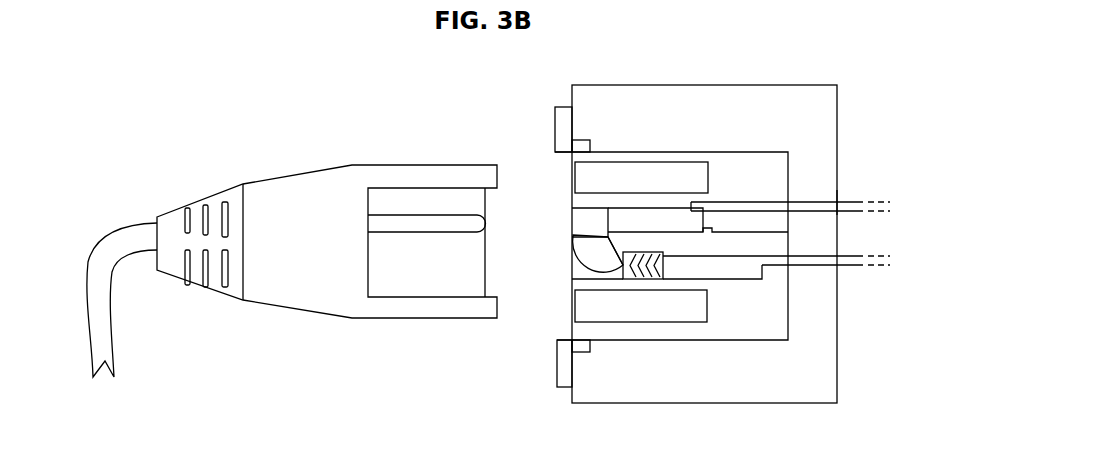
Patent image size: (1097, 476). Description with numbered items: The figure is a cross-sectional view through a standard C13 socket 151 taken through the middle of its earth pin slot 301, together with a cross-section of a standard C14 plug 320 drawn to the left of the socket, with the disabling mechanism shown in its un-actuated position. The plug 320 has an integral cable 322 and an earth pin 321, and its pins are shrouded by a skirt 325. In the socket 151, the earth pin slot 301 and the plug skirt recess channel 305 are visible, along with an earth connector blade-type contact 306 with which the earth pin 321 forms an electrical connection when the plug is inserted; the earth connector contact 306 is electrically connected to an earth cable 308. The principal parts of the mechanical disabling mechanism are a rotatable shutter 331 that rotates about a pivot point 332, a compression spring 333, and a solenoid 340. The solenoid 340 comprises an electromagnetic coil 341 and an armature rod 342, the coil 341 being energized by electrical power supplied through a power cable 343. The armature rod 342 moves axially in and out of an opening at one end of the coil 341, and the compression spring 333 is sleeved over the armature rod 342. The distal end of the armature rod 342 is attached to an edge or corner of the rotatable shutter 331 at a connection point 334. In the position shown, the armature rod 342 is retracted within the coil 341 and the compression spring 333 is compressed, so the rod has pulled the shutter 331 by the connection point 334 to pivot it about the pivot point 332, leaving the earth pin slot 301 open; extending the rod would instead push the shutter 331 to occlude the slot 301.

The socket 151 is at (628, 85).
The earth pin slot 301 is at (577, 220).
The plug skirt recess channel 305 is at (682, 173).
The earth connector blade-type contact 306 is at (675, 223).
The earth cable 308 is at (845, 203).
The plug 320 is at (292, 173).
The earth pin 321 is at (407, 213).
The cable 322 is at (123, 337).
The skirt 325 is at (492, 178).
The rotatable shutter 331 is at (582, 245).
The pivot point 332 is at (608, 236).
The compression spring 333 is at (623, 266).
The connection point 334 is at (623, 265).
The solenoid 340 is at (762, 279).
The electromagnetic coil 341 is at (737, 272).
The armature rod 342 is at (660, 280).
The power cable 343 is at (850, 265).